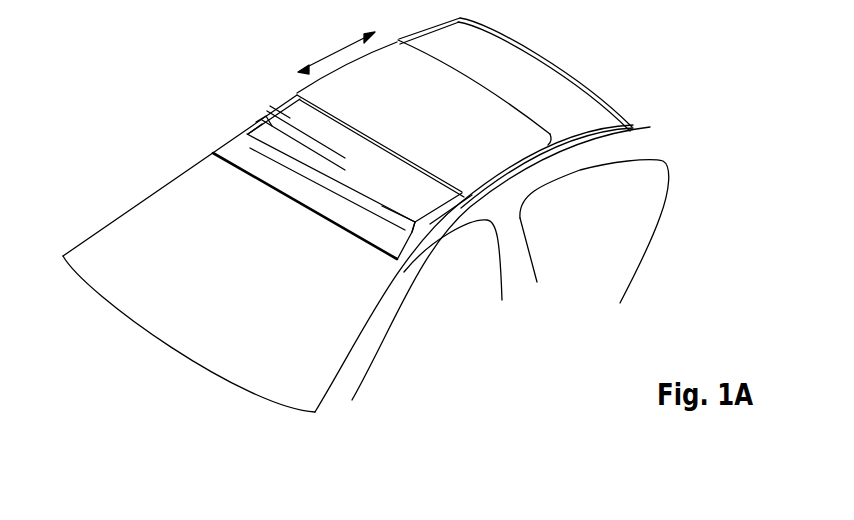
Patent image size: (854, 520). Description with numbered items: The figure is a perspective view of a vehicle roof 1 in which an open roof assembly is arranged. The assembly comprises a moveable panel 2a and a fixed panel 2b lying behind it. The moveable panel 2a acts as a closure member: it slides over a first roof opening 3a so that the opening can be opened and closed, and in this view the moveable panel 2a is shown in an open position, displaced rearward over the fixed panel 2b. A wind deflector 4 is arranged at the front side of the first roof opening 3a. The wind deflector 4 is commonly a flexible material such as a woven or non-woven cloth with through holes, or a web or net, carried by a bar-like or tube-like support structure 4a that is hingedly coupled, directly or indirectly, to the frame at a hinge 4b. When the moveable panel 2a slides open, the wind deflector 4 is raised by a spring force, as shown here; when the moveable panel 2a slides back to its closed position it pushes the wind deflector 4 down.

The vehicle roof 1 is at (625, 153).
The moveable panel 2a is at (424, 118).
The fixed panel 2b is at (466, 52).
The first roof opening 3a is at (306, 139).
The wind deflector 4 is at (258, 157).
The support structure 4a is at (382, 206).
The hinge 4b is at (256, 108).